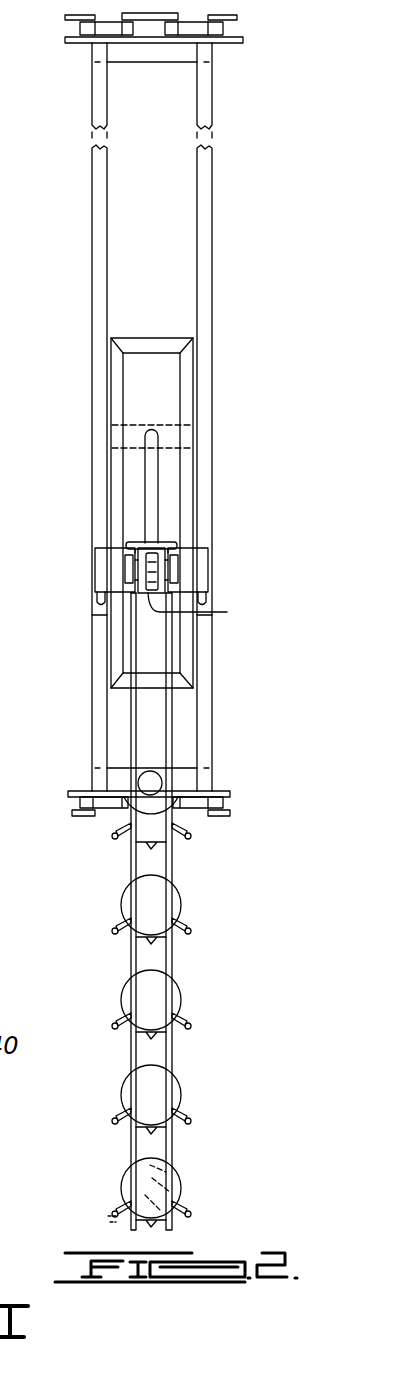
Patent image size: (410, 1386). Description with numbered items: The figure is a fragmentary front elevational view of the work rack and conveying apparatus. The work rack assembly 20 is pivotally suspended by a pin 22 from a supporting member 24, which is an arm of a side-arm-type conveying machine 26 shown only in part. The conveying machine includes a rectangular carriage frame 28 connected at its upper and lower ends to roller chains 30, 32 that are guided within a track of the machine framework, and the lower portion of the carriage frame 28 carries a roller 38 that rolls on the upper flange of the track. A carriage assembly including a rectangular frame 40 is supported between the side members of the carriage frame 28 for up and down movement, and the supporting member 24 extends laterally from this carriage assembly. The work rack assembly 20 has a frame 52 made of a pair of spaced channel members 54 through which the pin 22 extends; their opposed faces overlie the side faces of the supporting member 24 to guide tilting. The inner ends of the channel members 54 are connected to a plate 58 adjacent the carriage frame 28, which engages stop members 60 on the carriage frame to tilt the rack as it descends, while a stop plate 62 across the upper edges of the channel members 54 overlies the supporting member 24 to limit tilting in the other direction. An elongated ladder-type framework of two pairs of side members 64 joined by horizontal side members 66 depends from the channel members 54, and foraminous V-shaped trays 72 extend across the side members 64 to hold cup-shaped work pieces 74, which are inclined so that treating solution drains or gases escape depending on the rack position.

The work rack assembly 20 is at (154, 911).
The pin 22 is at (158, 524).
The supporting member 24 is at (201, 622).
The side-arm-type conveying machine 26 is at (217, 258).
The carriage frame 28 is at (207, 312).
The roller chain 30 is at (220, 31).
The roller chain 32 is at (223, 803).
The roller 38 is at (157, 783).
The rectangular frame 40 is at (188, 387).
The frame 52 is at (128, 595).
The channel members 54 is at (173, 545).
The plate 58 is at (105, 558).
The stop members 60 is at (97, 602).
The stop plate 62 is at (163, 540).
The side members 64 is at (137, 885).
The horizontal side members 66 is at (150, 1035).
The V-shaped tray 72 is at (122, 1020).
The work pieces 74 is at (140, 1157).